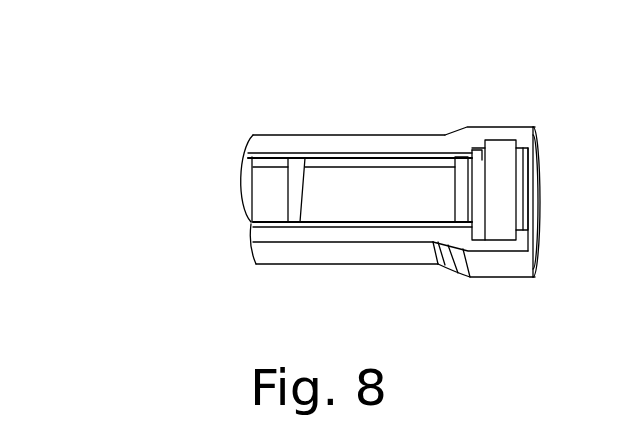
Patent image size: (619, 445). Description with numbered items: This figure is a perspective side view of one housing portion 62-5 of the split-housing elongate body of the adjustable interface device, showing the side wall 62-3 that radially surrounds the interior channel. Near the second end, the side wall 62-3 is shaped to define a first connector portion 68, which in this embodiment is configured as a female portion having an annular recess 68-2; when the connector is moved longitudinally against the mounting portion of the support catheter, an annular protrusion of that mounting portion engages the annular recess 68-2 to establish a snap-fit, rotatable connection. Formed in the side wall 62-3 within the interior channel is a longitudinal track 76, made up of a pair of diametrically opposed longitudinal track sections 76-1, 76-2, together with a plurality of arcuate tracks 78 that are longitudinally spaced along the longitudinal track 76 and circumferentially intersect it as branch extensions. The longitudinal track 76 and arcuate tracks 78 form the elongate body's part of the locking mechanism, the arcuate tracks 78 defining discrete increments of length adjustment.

The side wall 62-3 is at (475, 143).
The housing portion 62-5 is at (333, 134).
The first connector portion 68 is at (544, 120).
The annular recess 68-2 is at (503, 128).
The longitudinal track 76 is at (264, 198).
The longitudinal track section 76-1 is at (252, 222).
The longitudinal track section 76-2 is at (251, 156).
The arcuate tracks 78 is at (448, 196).